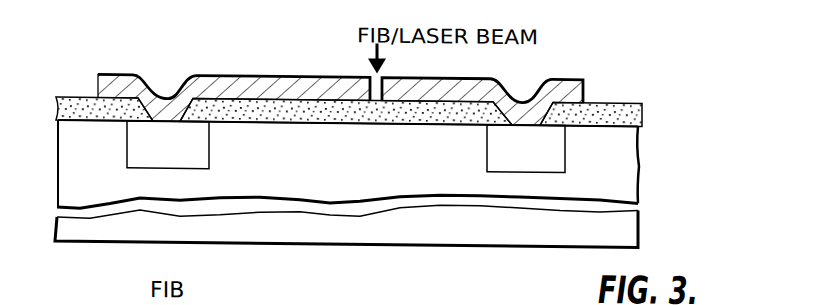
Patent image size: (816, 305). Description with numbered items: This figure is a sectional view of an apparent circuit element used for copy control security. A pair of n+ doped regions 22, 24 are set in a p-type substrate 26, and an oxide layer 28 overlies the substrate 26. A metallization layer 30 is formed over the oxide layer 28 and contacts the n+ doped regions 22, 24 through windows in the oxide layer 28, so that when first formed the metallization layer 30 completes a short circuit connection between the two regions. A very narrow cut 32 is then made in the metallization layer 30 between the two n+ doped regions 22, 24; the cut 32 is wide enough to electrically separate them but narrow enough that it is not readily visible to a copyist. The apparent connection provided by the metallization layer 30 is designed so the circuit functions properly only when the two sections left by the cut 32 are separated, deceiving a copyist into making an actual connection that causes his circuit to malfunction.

The n+ doped region 22 is at (210, 150).
The n+ doped region 24 is at (487, 153).
The p-type substrate 26 is at (633, 221).
The oxide layer 28 is at (297, 108).
The metallization layer 30 is at (231, 73).
The cut 32 is at (403, 90).